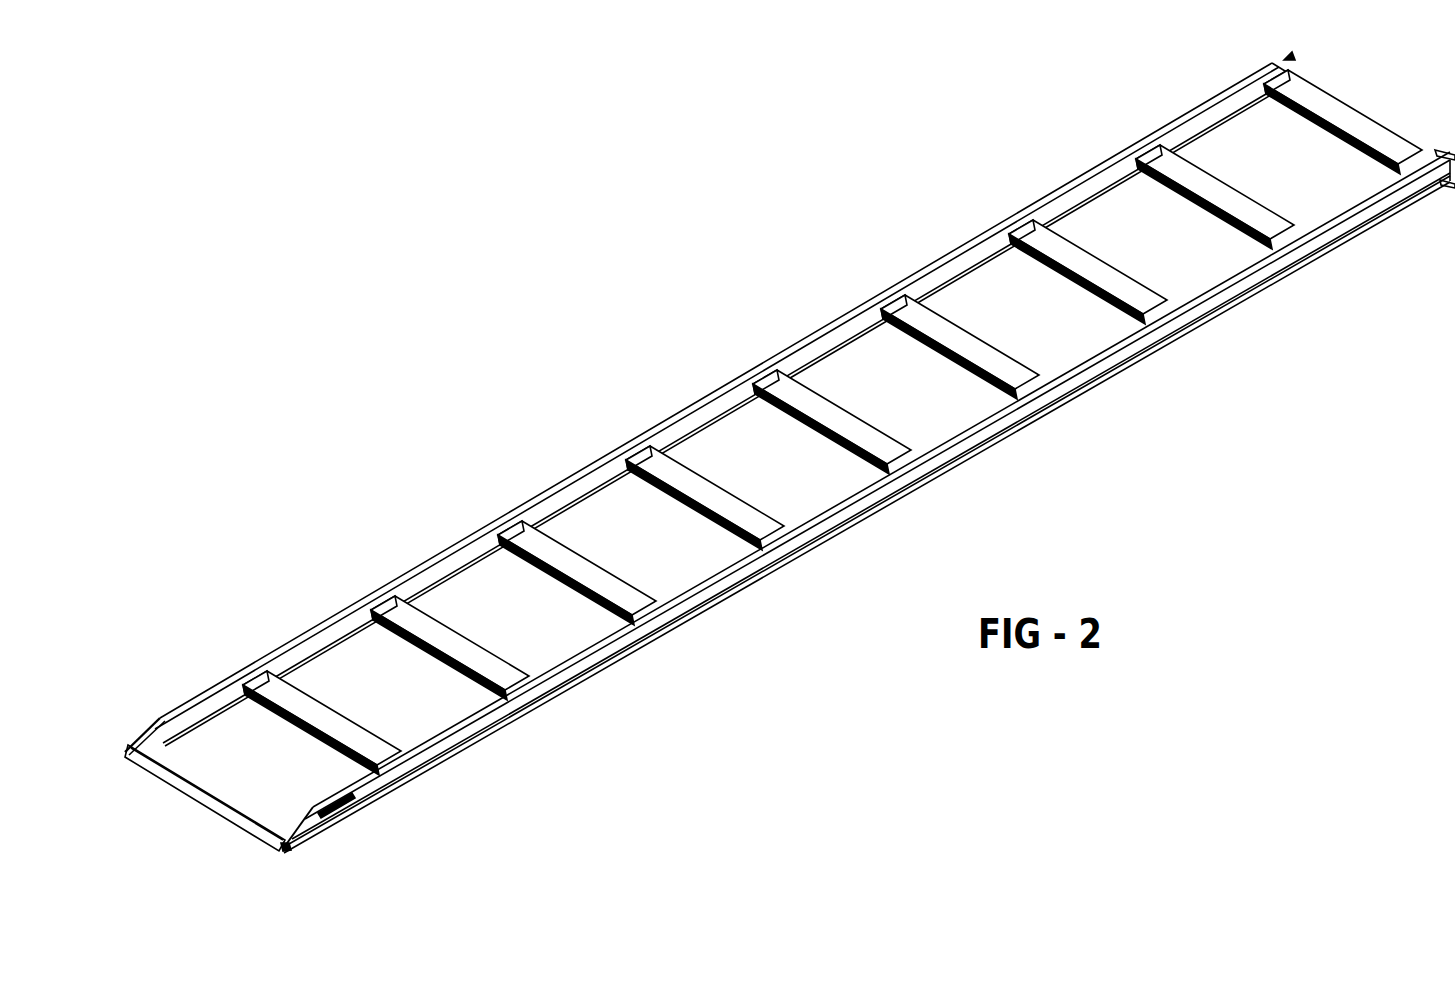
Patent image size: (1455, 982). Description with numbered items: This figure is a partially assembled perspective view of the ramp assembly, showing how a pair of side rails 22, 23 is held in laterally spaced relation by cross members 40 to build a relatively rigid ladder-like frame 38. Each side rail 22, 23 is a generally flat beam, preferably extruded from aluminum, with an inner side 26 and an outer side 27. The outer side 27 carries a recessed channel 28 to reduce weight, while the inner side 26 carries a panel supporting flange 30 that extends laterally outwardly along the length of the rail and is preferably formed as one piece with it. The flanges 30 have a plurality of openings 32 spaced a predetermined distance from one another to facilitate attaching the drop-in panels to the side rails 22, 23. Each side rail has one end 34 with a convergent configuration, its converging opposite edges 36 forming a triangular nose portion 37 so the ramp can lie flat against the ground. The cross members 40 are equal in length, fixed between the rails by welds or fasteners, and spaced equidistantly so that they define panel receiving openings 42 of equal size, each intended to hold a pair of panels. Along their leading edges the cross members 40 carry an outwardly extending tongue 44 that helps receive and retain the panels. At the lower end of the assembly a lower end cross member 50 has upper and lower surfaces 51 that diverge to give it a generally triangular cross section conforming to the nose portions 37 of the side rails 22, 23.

The side rail 22 is at (1396, 188).
The side rail 23 is at (1192, 110).
The inner side 26 is at (860, 312).
The outer side 27 is at (820, 356).
The recessed channel 28 is at (1153, 325).
The panel supporting flange 30 is at (718, 432).
The openings 32 is at (1250, 108).
The end 34 is at (282, 848).
The converging opposite edges 36 is at (135, 735).
The triangular nose portion 37 is at (305, 842).
The ladder-like frame 38 is at (1292, 57).
The cross members 40 is at (1389, 127).
The panel receiving openings 42 is at (1323, 193).
The tongue 44 is at (1292, 105).
The lower end cross member 50 is at (188, 797).
The upper and lower surfaces 51 is at (158, 765).